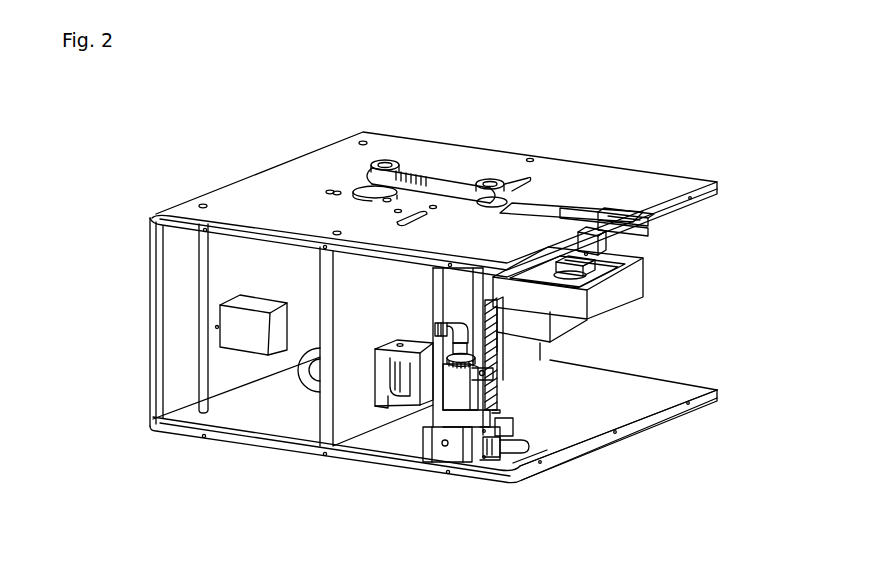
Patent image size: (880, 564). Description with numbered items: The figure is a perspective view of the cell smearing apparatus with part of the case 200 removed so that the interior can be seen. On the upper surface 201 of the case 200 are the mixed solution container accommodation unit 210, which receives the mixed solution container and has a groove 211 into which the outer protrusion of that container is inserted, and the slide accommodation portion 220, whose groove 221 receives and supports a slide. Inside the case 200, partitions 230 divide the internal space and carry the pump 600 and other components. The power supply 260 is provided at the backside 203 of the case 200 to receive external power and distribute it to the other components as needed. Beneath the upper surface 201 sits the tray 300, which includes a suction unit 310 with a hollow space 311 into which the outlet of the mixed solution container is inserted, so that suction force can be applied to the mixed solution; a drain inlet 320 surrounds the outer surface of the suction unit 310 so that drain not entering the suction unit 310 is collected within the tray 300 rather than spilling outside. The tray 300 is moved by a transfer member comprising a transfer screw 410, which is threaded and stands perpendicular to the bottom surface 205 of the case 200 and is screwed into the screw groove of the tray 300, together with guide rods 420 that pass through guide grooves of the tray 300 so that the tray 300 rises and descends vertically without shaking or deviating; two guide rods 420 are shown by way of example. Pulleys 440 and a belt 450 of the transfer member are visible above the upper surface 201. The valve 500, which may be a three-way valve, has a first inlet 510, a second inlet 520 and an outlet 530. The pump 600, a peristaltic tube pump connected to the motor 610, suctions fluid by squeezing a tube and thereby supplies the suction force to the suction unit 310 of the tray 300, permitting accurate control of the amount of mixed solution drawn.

The case 200 is at (262, 162).
The upper surface 201 is at (563, 163).
The backside 203 is at (173, 322).
The bottom surface 205 is at (617, 385).
The mixed solution container accommodation unit 210 is at (647, 226).
The groove 211 is at (617, 217).
The slide accommodation portion 220 is at (643, 235).
The groove 221 is at (622, 236).
The partitions 230 is at (347, 429).
The power supply 260 is at (240, 340).
The tray 300 is at (626, 312).
The suction unit 310 is at (630, 270).
The hollow space 311 is at (582, 248).
The drain inlet 320 is at (633, 303).
The transfer screw 410 is at (505, 320).
The guide rods 420 is at (653, 414).
The pulleys 440 is at (490, 182).
The belt 450 is at (363, 184).
The valve 500 is at (494, 467).
The first inlet 510 is at (462, 430).
The second inlet 520 is at (515, 419).
The outlet 530 is at (530, 445).
The pump 600 is at (420, 398).
The motor 610 is at (305, 375).